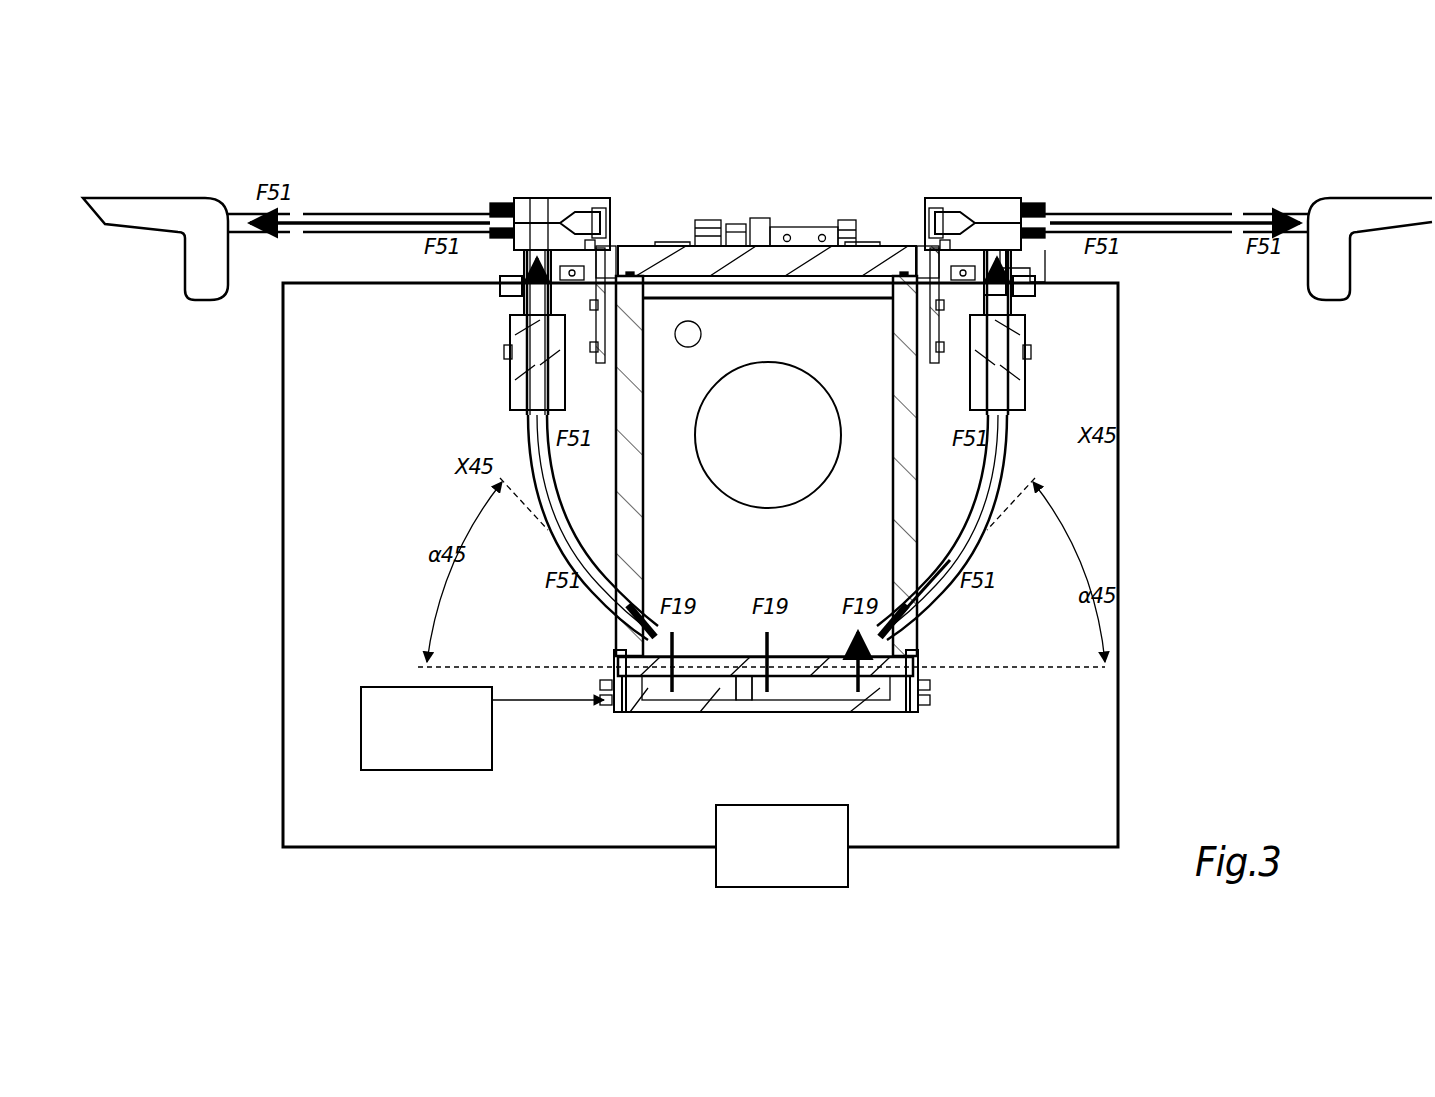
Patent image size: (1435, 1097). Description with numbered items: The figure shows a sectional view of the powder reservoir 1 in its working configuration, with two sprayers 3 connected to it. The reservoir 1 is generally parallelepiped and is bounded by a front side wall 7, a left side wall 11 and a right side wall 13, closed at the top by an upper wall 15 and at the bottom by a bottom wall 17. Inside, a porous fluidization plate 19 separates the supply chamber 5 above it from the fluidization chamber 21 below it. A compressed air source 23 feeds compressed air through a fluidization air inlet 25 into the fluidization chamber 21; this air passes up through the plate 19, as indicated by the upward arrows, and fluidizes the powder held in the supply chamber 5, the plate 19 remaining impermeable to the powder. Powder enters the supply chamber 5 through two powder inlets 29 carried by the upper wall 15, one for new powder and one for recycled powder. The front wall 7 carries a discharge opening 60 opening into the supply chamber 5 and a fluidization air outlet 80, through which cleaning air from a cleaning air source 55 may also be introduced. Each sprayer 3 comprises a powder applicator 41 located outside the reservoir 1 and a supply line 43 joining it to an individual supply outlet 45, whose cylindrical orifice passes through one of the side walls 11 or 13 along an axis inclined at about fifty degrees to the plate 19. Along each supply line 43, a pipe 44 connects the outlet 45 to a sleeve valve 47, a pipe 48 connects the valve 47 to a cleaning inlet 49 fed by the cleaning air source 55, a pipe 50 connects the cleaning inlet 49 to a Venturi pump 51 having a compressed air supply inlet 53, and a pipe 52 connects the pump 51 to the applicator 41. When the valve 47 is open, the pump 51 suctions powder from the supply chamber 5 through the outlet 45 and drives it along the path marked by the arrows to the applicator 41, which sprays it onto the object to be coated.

The reservoir 1 is at (800, 186).
The sprayer 3 is at (376, 152).
The supply chamber 5 is at (768, 477).
The front side wall 7 is at (850, 336).
The left side wall 11 is at (905, 488).
The right side wall 13 is at (630, 500).
The upper wall 15 is at (688, 258).
The bottom wall 17 is at (765, 700).
The porous fluidization plate 19 is at (815, 680).
The fluidization chamber 21 is at (712, 688).
The compressed air source 23 is at (482, 728).
The fluidization air inlet 25 is at (622, 700).
The powder inlet 29 is at (708, 240).
The powder applicator 41 is at (150, 214).
The supply line 43 is at (526, 440).
The pipe 44 is at (940, 582).
The supply outlet 45 is at (612, 622).
The valve 47 is at (510, 356).
The pipe 48 is at (1018, 300).
The cleaning inlet 49 is at (506, 290).
The pipe 50 is at (1024, 262).
The pump 51 is at (565, 205).
The pipe 52 is at (1298, 210).
The compressed air supply inlet 53 is at (905, 232).
The cleaning air source 55 is at (782, 846).
The discharge opening 60 is at (768, 435).
The fluidization air outlet 80 is at (703, 333).